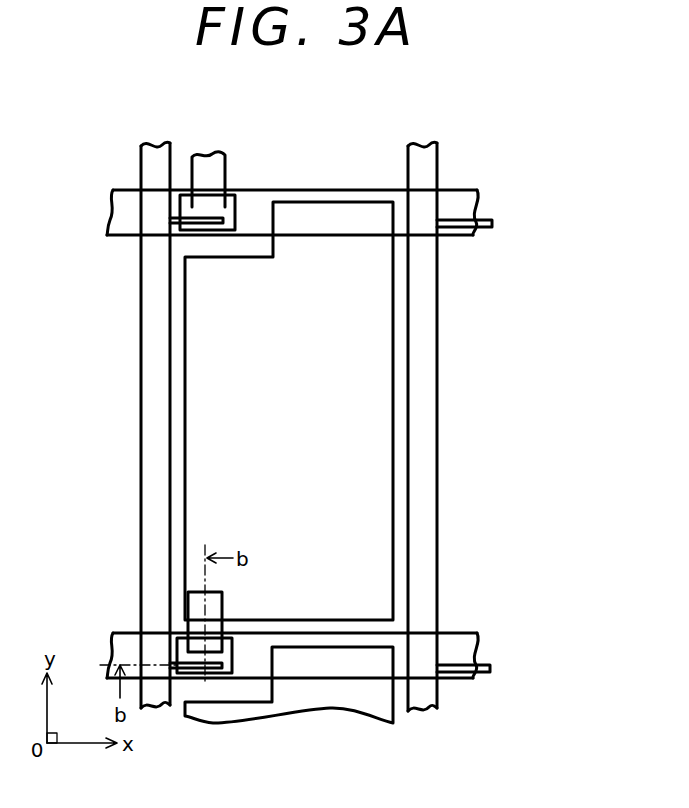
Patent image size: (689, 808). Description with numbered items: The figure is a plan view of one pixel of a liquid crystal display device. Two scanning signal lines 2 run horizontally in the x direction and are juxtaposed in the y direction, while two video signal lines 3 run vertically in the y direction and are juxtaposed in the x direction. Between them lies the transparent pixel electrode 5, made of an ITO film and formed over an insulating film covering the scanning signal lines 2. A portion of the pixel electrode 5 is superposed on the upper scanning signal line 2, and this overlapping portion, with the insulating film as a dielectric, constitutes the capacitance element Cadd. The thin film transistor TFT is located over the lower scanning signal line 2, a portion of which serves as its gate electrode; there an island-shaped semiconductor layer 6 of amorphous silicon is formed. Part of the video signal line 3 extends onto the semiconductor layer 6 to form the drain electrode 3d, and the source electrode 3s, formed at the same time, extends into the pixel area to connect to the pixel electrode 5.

The scanning signal line 2 is at (477, 208).
The video signal line 3 is at (154, 142).
The source electrode 3s is at (190, 632).
The drain electrode 3d is at (177, 672).
The pixel electrode 5 is at (393, 364).
The semiconductor layer 6 is at (200, 676).
The capacitance element Cadd is at (358, 217).
The thin film transistor TFT is at (240, 660).